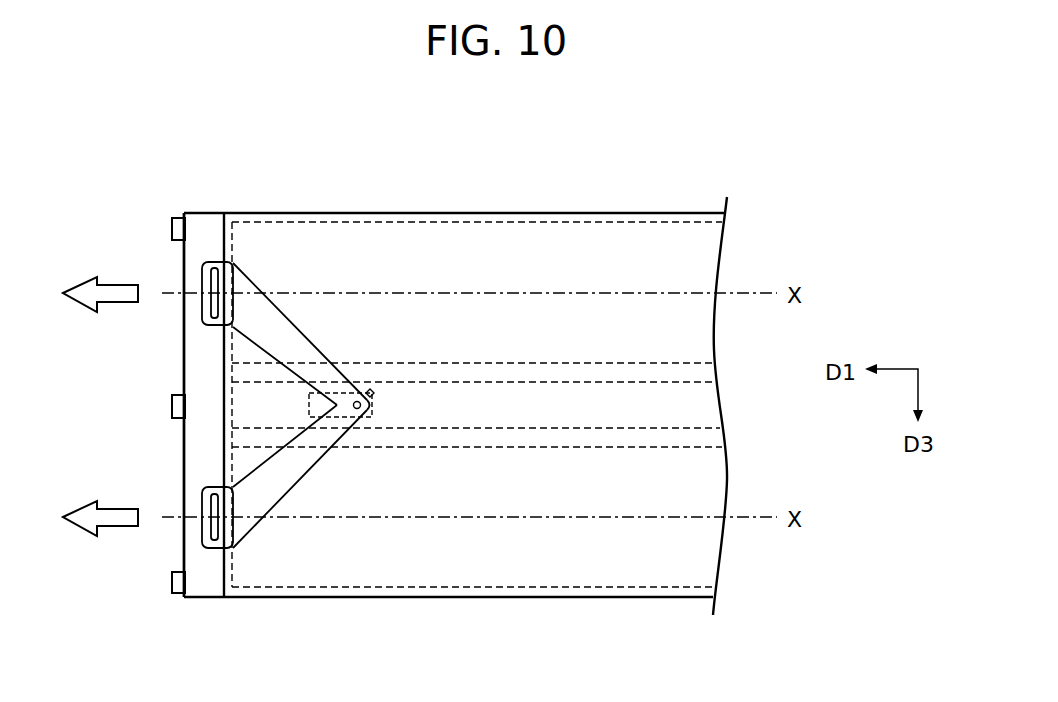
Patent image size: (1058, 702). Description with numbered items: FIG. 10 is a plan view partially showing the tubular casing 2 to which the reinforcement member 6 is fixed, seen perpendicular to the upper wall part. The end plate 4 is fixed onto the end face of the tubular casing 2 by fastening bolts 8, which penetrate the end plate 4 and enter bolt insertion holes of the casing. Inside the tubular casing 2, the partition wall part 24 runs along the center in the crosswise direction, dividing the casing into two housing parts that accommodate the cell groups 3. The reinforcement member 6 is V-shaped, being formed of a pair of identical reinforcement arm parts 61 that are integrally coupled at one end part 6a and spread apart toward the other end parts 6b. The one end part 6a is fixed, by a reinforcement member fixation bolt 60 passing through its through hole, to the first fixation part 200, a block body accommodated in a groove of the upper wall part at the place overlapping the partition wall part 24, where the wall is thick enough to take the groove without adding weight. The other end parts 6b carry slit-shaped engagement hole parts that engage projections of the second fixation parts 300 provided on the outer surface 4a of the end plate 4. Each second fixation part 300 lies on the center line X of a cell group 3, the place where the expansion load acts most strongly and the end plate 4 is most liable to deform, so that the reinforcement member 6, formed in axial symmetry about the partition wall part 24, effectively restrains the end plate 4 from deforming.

The tubular casing 2 is at (599, 205).
The cell group 3 is at (507, 250).
The end plate 4 is at (205, 200).
The end plate outer surface 4a is at (200, 355).
The reinforcement member 6 is at (314, 400).
The one end part 6a is at (357, 413).
The other end part 6b is at (231, 260).
The fastening bolt 8 is at (177, 217).
The partition wall part 24 is at (698, 405).
The reinforcement member fixation bolt 60 is at (371, 390).
The reinforcement arm part 61 is at (288, 336).
The first fixation part 200 is at (338, 418).
The second fixation part 300 is at (190, 280).